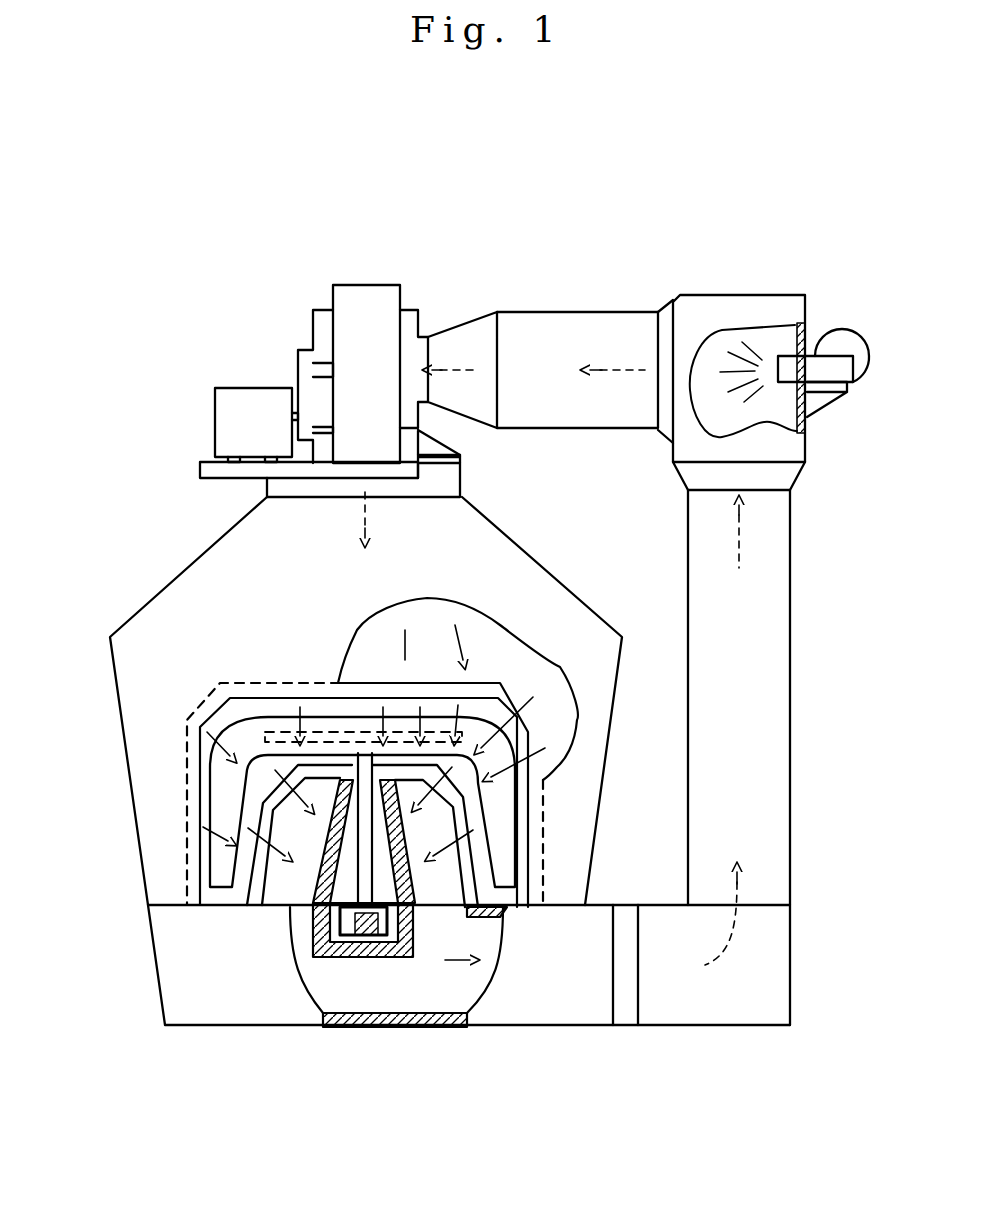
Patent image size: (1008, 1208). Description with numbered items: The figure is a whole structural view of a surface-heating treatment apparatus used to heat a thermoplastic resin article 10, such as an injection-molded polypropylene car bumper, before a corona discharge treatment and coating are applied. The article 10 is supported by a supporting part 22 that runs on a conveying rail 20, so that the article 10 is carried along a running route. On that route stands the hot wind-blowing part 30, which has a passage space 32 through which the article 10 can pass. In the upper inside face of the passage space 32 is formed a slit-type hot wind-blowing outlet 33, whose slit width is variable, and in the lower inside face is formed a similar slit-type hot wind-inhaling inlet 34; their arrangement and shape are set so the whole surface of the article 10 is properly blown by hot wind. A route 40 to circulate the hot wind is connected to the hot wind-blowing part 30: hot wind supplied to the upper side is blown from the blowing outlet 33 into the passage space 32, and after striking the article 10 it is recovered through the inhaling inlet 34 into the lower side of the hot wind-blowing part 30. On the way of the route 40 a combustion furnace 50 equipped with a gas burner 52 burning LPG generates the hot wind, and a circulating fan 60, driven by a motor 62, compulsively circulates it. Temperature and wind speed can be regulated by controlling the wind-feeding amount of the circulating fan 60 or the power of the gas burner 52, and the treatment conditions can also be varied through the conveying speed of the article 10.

The article 10 is at (228, 802).
The conveying rail 20 is at (362, 937).
The supporting part 22 is at (375, 873).
The hot wind-blowing part 30 is at (110, 675).
The space 32 is at (223, 713).
The hot wind-blowing outlet 33 is at (487, 692).
The hot wind-inhaling inlet 34 is at (463, 843).
The route 40 is at (755, 722).
The combustion furnace 50 is at (721, 348).
The gas burner 52 is at (840, 347).
The circulating fan 60 is at (360, 298).
The motor 62 is at (245, 398).